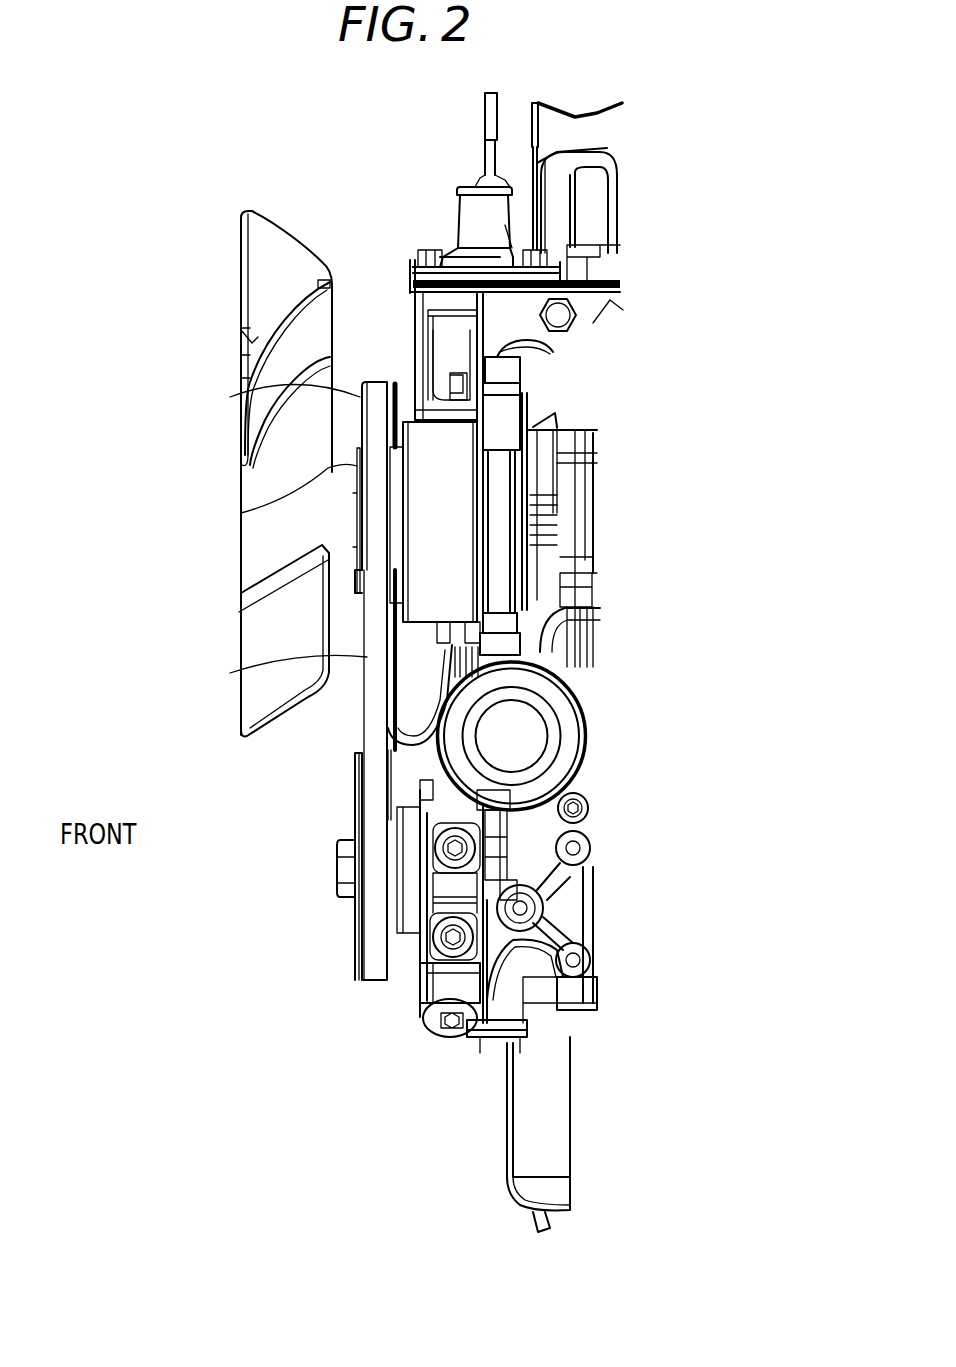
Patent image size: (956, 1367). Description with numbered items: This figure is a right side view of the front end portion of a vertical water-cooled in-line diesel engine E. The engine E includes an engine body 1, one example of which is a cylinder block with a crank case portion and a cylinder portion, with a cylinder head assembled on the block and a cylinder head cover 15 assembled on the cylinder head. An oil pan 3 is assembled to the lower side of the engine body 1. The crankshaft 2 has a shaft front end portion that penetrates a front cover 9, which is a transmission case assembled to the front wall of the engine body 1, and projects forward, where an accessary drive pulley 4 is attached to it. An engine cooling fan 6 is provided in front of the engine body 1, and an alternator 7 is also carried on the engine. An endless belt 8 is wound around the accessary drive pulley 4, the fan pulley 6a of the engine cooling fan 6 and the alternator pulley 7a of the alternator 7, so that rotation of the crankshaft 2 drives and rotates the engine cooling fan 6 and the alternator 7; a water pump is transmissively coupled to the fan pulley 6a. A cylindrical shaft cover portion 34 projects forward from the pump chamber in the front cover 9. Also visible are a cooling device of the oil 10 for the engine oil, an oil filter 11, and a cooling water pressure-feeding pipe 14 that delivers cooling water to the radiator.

The diesel engine E is at (313, 158).
The engine body 1 is at (557, 1000).
The crankshaft 2 is at (347, 870).
The oil pan 3 is at (520, 1120).
The accessary drive pulley 4 is at (355, 772).
The engine cooling fan 6 is at (257, 258).
The fan pulley 6a is at (240, 395).
The alternator 7 is at (453, 495).
The alternator pulley 7a is at (241, 513).
The endless belt 8 is at (241, 675).
The front cover 9 is at (420, 977).
The cooling device of the oil 10 is at (420, 977).
The oil filter 11 is at (565, 718).
The cooling water pressure-feeding pipe 14 is at (472, 212).
The cylinder head cover 15 is at (533, 148).
The cylindrical shaft cover portion 34 is at (360, 920).